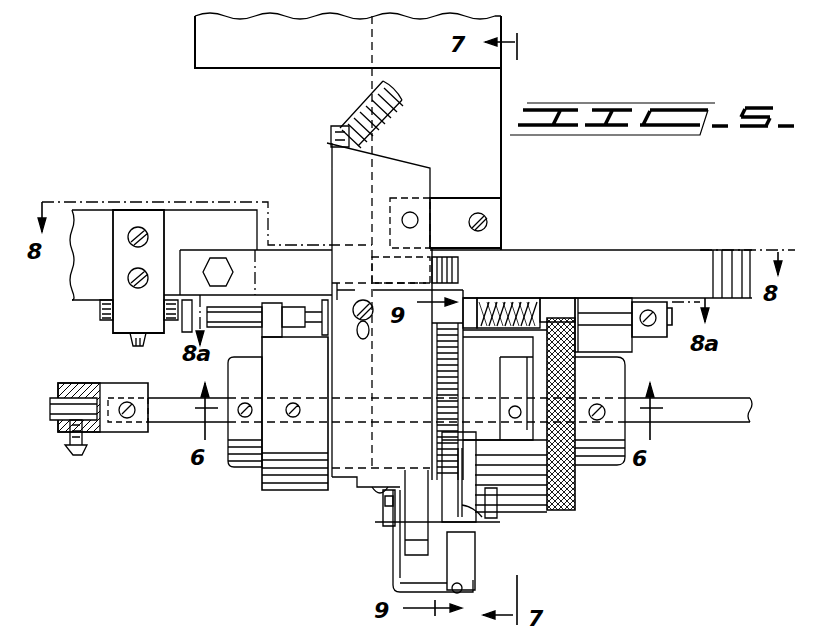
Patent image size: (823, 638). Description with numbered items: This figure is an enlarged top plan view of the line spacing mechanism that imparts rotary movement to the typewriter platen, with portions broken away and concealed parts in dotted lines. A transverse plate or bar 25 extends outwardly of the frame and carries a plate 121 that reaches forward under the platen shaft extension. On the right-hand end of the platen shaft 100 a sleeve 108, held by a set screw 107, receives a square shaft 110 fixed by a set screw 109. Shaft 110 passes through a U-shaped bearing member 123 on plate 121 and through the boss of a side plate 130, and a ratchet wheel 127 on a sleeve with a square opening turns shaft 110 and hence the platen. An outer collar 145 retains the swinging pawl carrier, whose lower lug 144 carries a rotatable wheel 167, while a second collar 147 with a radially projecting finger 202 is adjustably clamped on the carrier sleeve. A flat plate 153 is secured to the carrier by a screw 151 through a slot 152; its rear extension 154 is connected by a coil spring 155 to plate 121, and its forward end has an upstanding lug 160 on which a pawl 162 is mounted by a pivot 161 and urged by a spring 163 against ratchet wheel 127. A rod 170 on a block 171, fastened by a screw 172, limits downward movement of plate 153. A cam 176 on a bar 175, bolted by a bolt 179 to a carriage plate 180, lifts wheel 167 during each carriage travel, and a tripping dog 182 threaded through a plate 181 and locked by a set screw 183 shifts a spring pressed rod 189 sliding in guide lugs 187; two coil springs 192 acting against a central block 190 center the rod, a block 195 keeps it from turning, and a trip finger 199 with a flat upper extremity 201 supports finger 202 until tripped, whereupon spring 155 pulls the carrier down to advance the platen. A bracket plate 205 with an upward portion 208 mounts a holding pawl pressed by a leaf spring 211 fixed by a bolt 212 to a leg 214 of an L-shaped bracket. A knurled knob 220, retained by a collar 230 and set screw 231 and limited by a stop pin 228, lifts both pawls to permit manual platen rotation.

The plate or bar 25 is at (255, 55).
The platen shaft 100 is at (55, 410).
The set screw 107 is at (72, 453).
The sleeve 108 is at (110, 428).
The set screw 109 is at (127, 420).
The square shaft 110 is at (188, 422).
The plate 121 is at (490, 110).
The U-shaped bearing or supporting member 123 is at (478, 374).
The ratchet wheel 127 is at (445, 348).
The plate 130 is at (520, 440).
The lower lug 144 is at (478, 293).
The outer collar 145 is at (247, 448).
The second collar 147 is at (300, 478).
The screw 151 is at (358, 299).
The slot 152 is at (360, 339).
The flat plate or bar 153 is at (347, 172).
The extension 154 is at (331, 138).
The coil spring 155 is at (356, 97).
The upstanding lug 160 is at (417, 533).
The pivot 161 is at (480, 538).
The ratchet dog or pawl 162 is at (487, 548).
The spring 163 is at (450, 497).
The rotatable wheel 167 is at (460, 258).
The vertically extending rod 170 is at (410, 212).
The block 171 is at (446, 205).
The screw 172 is at (476, 213).
The bar 175 is at (243, 258).
The reciprocating cam 176 is at (643, 258).
The bolt 179 is at (213, 262).
The plate 180 is at (93, 222).
The plate 181 is at (145, 218).
The tripping dog 182 is at (100, 315).
The set screw 183 is at (128, 345).
The guide lugs 187 is at (583, 313).
The spring pressed rod 189 is at (598, 317).
The block 190 is at (480, 305).
The coil springs 192 is at (547, 312).
The block 195 is at (657, 303).
The trip finger 199 is at (280, 304).
The flat upper extremity 201 is at (302, 312).
The lug or finger 202 is at (282, 330).
The bracket plate 205 is at (375, 487).
The upwardly projecting portion 208 is at (407, 563).
The leaf spring 211 is at (462, 574).
The bolt 212 is at (462, 589).
The leg 214 is at (395, 578).
The knurled knob 220 is at (582, 503).
The stop pin 228 is at (521, 410).
The collar 230 is at (615, 465).
The set screw 231 is at (605, 405).